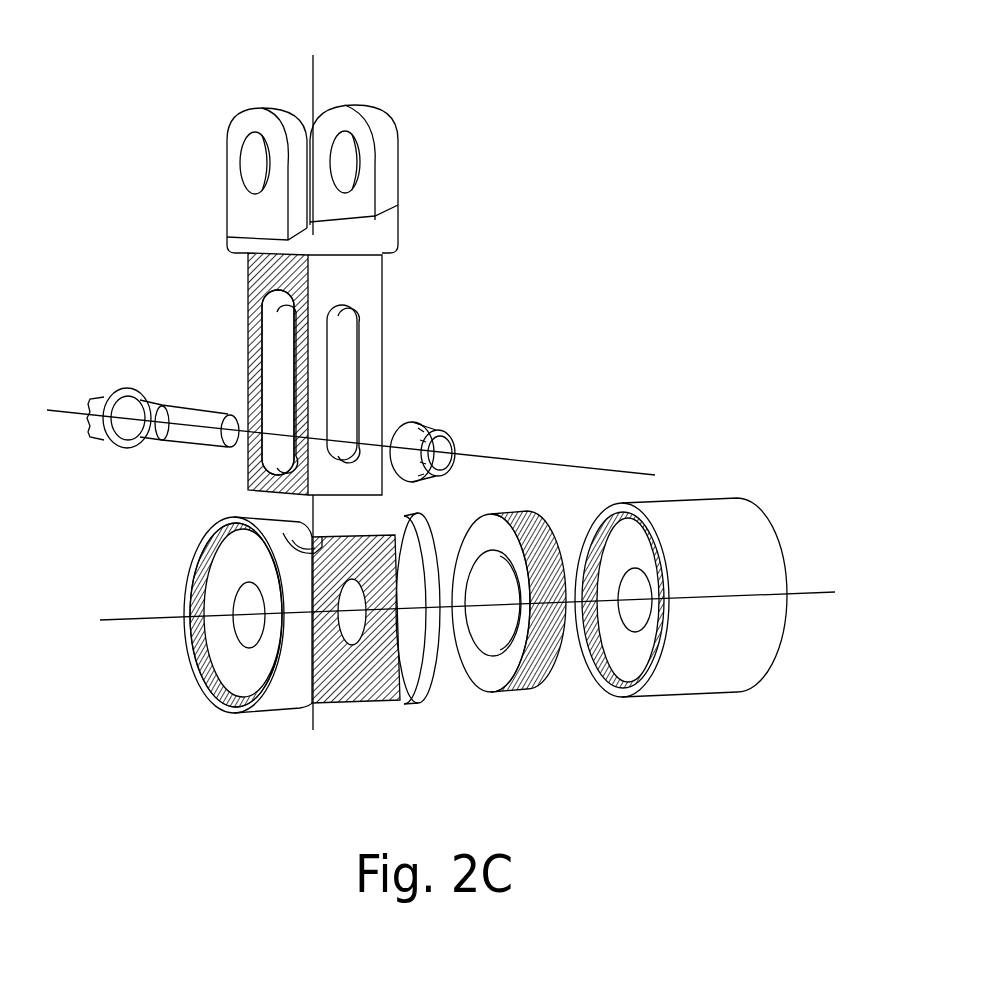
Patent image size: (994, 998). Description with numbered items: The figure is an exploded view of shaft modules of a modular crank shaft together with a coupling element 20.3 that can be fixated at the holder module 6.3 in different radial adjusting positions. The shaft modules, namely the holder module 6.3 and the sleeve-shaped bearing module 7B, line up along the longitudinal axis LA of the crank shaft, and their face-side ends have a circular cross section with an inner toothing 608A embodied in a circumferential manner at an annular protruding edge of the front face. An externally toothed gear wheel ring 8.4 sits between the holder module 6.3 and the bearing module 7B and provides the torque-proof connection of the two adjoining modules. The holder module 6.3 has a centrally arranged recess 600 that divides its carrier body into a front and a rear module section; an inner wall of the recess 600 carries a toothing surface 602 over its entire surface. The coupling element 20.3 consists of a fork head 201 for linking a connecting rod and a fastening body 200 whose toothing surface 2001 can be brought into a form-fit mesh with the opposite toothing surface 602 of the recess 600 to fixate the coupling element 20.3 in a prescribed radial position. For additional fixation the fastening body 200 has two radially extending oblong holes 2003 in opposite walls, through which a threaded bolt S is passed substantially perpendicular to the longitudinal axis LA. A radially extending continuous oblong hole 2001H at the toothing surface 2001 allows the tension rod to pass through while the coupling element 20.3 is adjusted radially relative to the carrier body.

The fork head 201 is at (235, 128).
The coupling element 20.3 is at (375, 105).
The fastening body 200 is at (368, 272).
The toothing surface 2001 is at (248, 272).
The oblong hole 2001H is at (264, 347).
The oblong hole 2003 is at (360, 350).
The threaded bolt S is at (110, 395).
The recess 600 is at (283, 535).
The longitudinal axis LA is at (100, 620).
The inner toothing 608A is at (207, 680).
The holder module 6.3 is at (250, 719).
The toothing surface 602 is at (362, 687).
The gear wheel ring 8.4 is at (533, 699).
The bearing module 7B is at (746, 493).